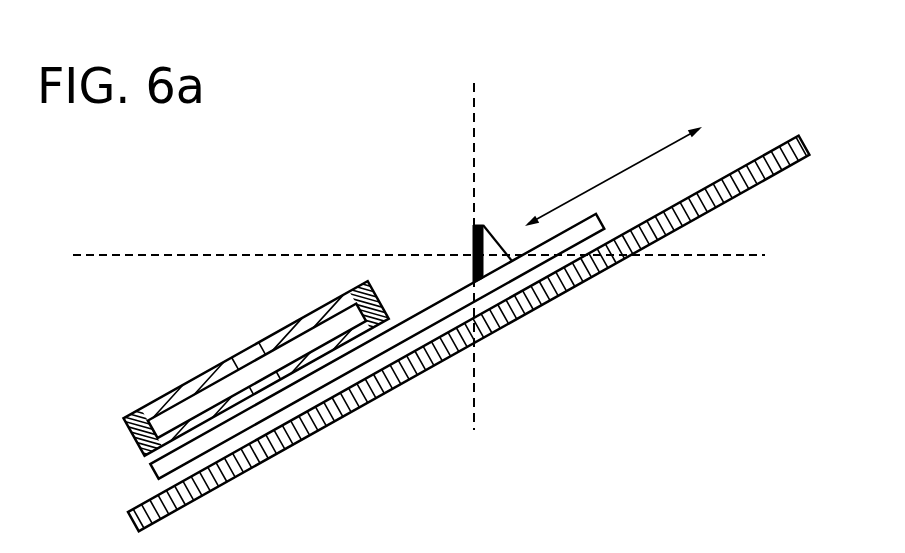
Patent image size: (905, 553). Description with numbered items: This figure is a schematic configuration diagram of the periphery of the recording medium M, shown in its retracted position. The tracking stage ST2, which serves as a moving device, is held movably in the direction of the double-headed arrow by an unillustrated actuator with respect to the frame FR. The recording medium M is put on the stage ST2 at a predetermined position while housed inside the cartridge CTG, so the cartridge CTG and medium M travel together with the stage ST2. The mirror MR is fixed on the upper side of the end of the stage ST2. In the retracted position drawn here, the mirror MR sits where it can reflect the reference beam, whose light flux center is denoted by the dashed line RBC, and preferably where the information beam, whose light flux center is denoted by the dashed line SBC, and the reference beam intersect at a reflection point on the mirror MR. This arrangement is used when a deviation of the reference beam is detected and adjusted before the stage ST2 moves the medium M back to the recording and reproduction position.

The cartridge CTG is at (153, 395).
The recording medium M is at (316, 332).
The tracking stage ST2 is at (280, 408).
The frame FR is at (422, 363).
The mirror MR is at (473, 238).
The information beam light flux center SBC is at (475, 241).
The reference beam light flux center RBC is at (175, 255).